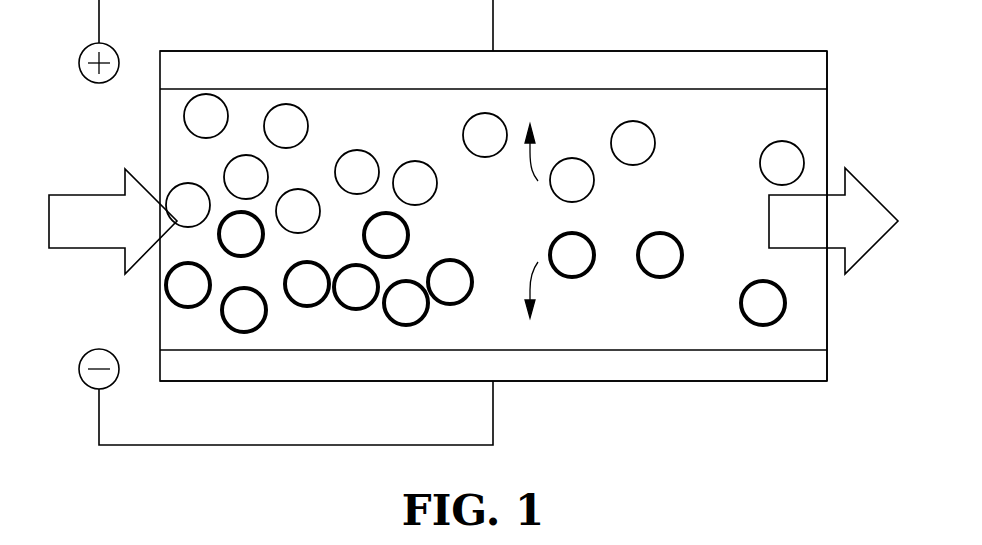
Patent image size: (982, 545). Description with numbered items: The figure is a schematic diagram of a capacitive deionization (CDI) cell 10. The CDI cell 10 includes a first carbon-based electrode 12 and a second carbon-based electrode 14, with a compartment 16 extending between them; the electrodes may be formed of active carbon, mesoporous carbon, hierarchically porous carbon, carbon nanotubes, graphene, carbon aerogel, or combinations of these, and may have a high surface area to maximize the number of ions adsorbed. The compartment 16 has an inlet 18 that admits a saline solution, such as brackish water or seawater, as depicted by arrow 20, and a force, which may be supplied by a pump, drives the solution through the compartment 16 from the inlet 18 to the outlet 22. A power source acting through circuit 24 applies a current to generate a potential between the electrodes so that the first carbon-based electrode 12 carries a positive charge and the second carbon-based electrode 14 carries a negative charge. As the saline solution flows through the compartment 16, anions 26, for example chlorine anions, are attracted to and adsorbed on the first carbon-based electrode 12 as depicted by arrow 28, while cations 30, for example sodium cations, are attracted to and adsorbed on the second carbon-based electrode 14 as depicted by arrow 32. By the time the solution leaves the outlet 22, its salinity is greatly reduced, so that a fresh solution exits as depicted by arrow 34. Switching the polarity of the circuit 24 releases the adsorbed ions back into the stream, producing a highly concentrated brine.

The capacitive deionization (CDI) cell 10 is at (786, 418).
The first carbon-based electrode 12 is at (728, 51).
The second carbon-based electrode 14 is at (728, 382).
The compartment 16 is at (817, 120).
The inlet 18 is at (177, 323).
The arrow 20 is at (49, 221).
The outlet 22 is at (817, 302).
The circuit 24 is at (214, 447).
The anions 26 is at (224, 177).
The arrow 28 is at (530, 155).
The cations 30 is at (406, 326).
The arrow 32 is at (532, 289).
The arrow 34 is at (877, 198).